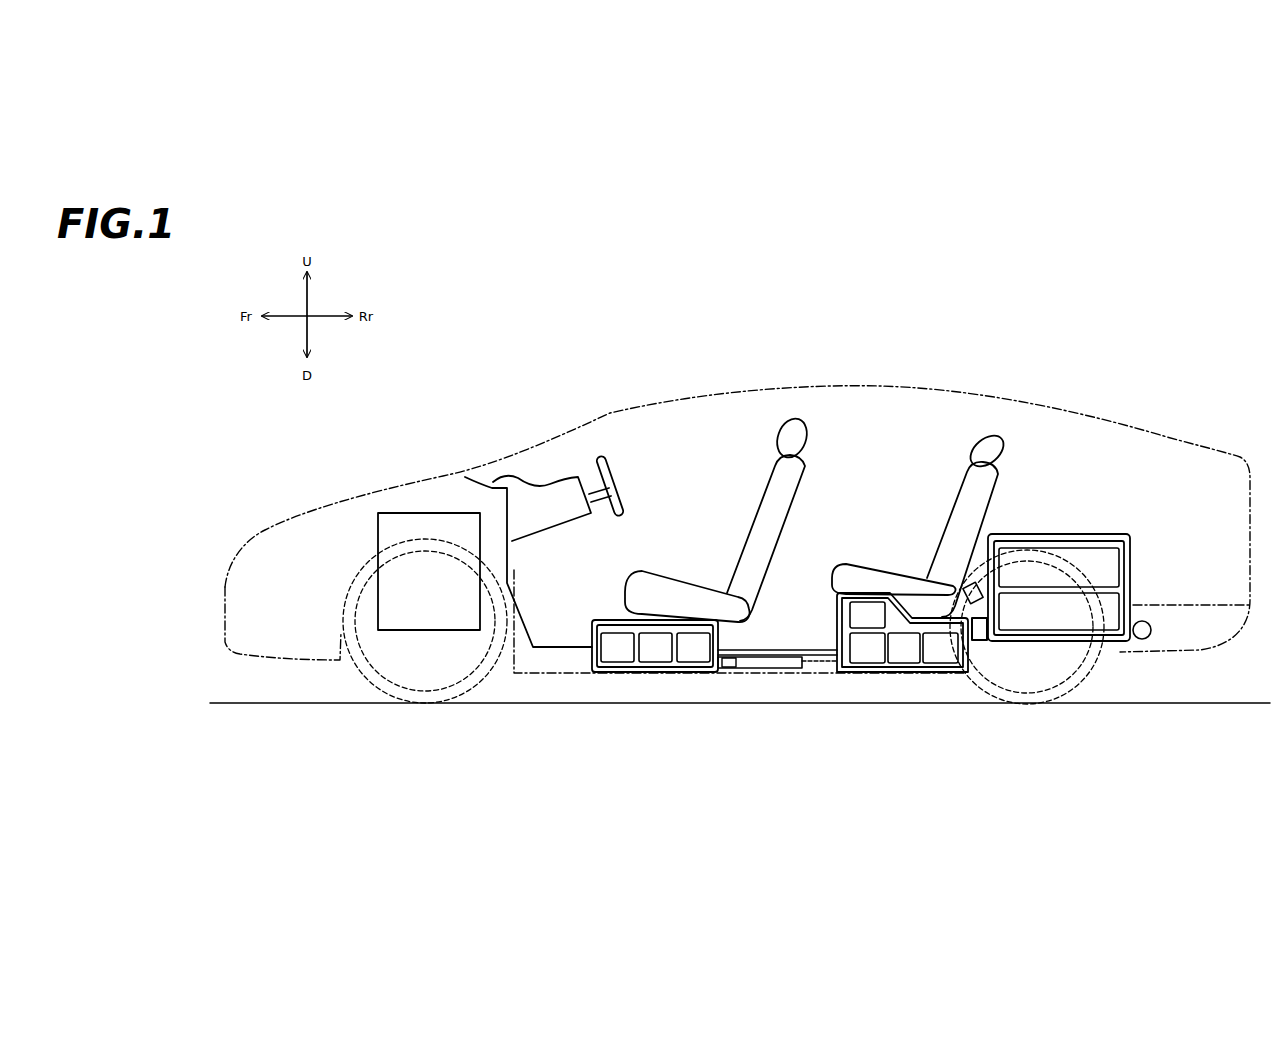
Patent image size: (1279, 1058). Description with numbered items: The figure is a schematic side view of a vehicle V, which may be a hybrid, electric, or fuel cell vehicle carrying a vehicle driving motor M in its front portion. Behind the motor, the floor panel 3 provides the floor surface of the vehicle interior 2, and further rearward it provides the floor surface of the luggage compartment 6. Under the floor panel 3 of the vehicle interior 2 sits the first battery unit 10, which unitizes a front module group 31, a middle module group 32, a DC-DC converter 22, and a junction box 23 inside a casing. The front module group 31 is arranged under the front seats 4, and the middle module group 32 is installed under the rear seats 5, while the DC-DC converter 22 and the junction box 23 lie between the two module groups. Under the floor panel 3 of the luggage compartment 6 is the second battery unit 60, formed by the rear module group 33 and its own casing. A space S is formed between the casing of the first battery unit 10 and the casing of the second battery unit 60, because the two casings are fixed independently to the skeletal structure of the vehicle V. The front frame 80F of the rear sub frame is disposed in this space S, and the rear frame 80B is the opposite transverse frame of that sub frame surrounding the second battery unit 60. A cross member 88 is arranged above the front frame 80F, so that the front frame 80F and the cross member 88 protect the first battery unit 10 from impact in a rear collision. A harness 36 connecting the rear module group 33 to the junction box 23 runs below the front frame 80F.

The vehicle V is at (978, 338).
The vehicle driving motor M is at (428, 513).
The vehicle interior 2 is at (683, 459).
The luggage compartment 6 is at (1103, 474).
The floor panel 3 is at (650, 660).
The front seats 4 is at (668, 577).
The rear seats 5 is at (877, 571).
The first battery unit 10 is at (680, 673).
The DC-DC converter 22 is at (766, 708).
The junction box 23 is at (728, 665).
The front module group 31 is at (610, 663).
The middle module group 32 is at (865, 667).
The rear module group 33 is at (1057, 638).
The harness 36 is at (995, 647).
The space S is at (979, 652).
The second battery unit 60 is at (1117, 634).
The front frame 80F is at (998, 600).
The rear frame 80B is at (1151, 631).
The cross member 88 is at (984, 582).